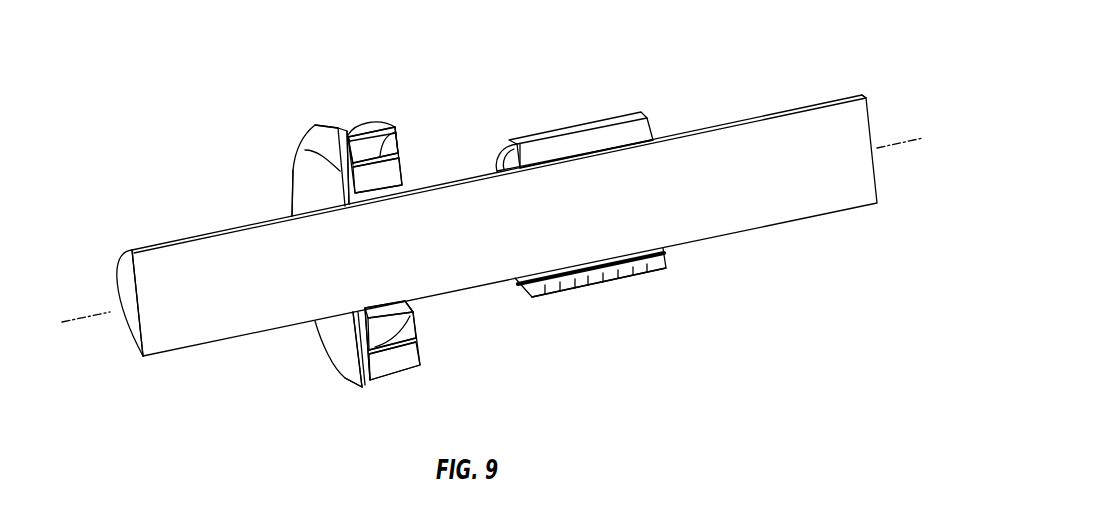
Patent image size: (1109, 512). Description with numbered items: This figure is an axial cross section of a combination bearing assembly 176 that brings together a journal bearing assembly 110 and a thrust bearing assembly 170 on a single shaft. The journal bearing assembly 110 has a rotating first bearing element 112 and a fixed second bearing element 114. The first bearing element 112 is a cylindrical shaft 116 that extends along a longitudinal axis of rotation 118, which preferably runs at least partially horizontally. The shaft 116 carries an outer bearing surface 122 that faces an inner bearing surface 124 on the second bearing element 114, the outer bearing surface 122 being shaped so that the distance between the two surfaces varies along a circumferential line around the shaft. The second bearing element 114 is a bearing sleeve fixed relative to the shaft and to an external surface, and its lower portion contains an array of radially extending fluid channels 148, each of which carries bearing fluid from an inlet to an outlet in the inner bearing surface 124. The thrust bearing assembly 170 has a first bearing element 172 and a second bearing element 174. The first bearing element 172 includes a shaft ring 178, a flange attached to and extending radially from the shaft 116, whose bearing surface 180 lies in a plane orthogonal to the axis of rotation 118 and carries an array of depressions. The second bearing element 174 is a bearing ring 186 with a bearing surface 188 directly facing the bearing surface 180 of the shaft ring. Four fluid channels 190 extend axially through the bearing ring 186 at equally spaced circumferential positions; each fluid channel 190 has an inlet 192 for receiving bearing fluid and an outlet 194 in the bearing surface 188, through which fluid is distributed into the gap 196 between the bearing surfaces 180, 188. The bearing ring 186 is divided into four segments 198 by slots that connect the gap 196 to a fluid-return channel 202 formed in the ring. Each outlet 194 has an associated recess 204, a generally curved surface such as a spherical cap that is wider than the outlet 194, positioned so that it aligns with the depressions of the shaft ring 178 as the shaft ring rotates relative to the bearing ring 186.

The bearing assembly 110 is at (661, 109).
The first bearing element 112 is at (600, 232).
The second bearing element 114 is at (599, 126).
The cylindrical shaft 116 is at (724, 119).
The longitudinal axis of rotation 118 is at (898, 143).
The outer bearing surface 122 is at (562, 157).
The inner bearing surface 124 is at (542, 172).
The radial fluid channel 148 is at (553, 298).
The thrust bearing assembly 170 is at (262, 143).
The first bearing element 172 is at (305, 143).
The second bearing element 174 is at (403, 137).
The combination bearing assembly 176 is at (678, 44).
The shaft ring 178 is at (316, 125).
The bearing surface 180 is at (367, 383).
The bearing ring 186 is at (405, 173).
The bearing surface 188 is at (348, 377).
The fluid channel 190 is at (398, 128).
The inlet 192 is at (399, 157).
The outlet 194 is at (305, 150).
The gap 196 is at (345, 119).
The segment 198 is at (402, 111).
The fluid-return channel 202 is at (357, 123).
The recess 204 is at (349, 163).